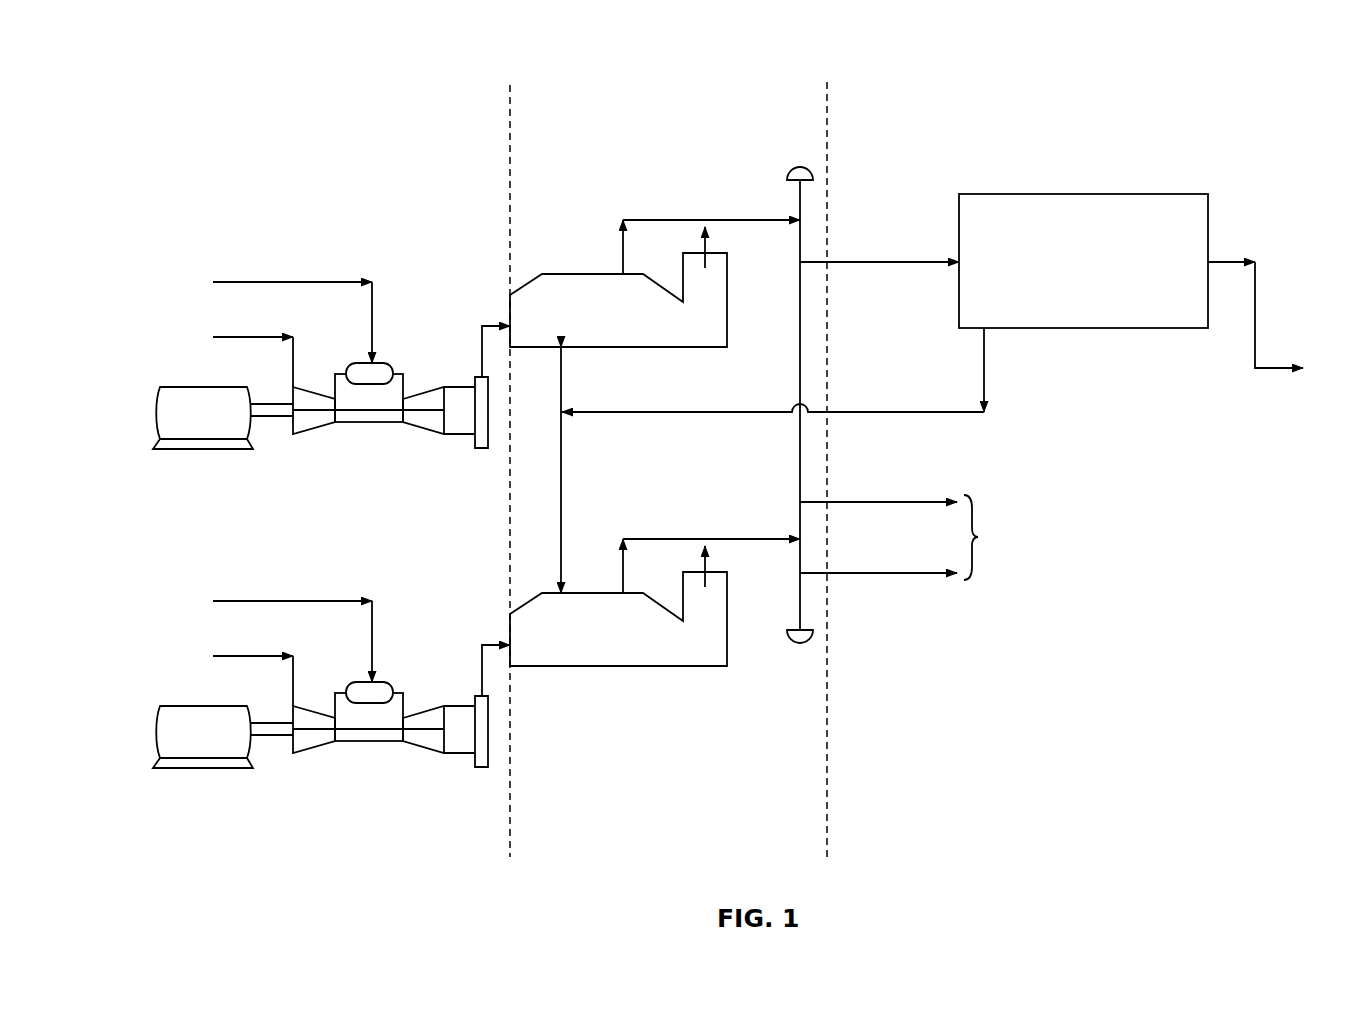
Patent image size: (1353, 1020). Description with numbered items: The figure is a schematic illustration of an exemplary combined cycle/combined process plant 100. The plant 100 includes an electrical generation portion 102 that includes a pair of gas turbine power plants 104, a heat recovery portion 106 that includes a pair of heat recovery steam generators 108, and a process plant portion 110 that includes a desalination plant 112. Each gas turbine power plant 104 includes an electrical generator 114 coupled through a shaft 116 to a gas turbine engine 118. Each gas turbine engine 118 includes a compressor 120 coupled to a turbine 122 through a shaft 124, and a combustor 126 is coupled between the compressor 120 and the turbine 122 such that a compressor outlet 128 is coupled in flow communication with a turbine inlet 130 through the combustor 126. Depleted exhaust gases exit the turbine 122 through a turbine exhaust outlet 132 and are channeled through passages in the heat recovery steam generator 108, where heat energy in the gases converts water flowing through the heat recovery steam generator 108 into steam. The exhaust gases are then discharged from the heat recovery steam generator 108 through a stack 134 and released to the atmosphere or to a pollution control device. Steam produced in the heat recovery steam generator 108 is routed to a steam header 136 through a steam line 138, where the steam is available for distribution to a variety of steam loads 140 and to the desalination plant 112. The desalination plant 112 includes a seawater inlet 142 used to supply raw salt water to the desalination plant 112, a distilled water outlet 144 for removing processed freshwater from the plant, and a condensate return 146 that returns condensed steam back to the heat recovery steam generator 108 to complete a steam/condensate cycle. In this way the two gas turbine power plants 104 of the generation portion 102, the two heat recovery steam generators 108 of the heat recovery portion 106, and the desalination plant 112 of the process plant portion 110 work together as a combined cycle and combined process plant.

The combined cycle/combined process plant 100 is at (262, 93).
The electrical generation portion 102 is at (293, 257).
The gas turbine power plant 104 is at (368, 475).
The heat recovery portion 106 is at (652, 178).
The heat recovery steam generator 108 is at (678, 357).
The process plant portion 110 is at (1057, 160).
The desalination plant 112 is at (1130, 200).
The generator 114 is at (157, 416).
The shaft 116 is at (278, 419).
The gas turbine engine 118 is at (403, 358).
The compressor 120 is at (315, 398).
The turbine 122 is at (425, 433).
The shaft 124 is at (340, 418).
The combustor 126 is at (380, 363).
The compressor outlet 128 is at (342, 388).
The turbine inlet 130 is at (405, 388).
The turbine exhaust outlet 132 is at (487, 321).
The stack 134 is at (728, 295).
The steam header 136 is at (800, 240).
The steam line 138 is at (690, 220).
The steam loads 140 is at (914, 537).
The seawater inlet 142 is at (1130, 332).
The distilled water outlet 144 is at (1257, 318).
The condensate return 146 is at (897, 413).